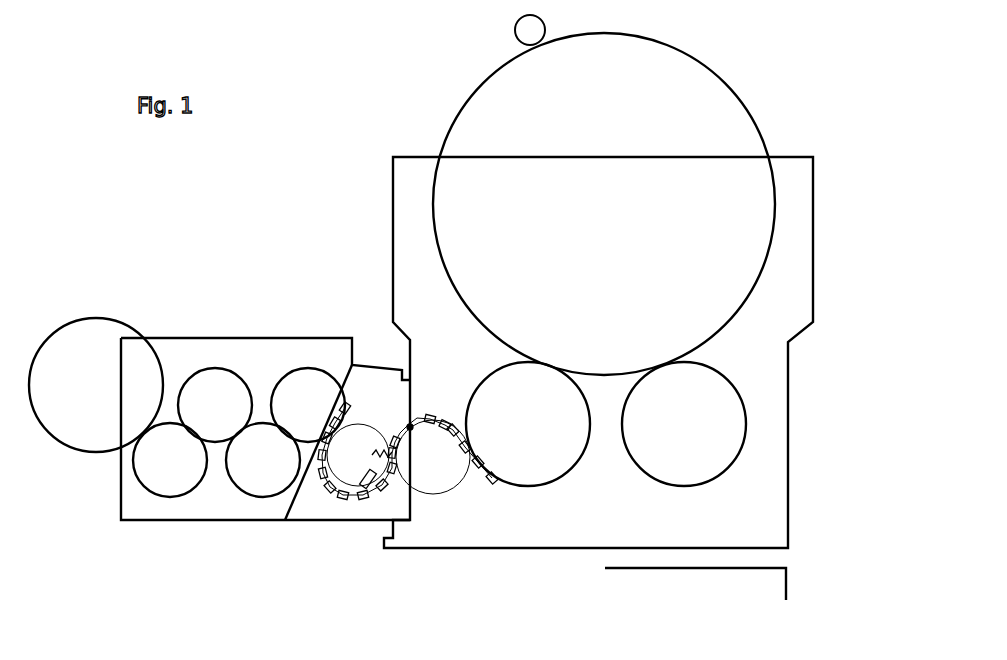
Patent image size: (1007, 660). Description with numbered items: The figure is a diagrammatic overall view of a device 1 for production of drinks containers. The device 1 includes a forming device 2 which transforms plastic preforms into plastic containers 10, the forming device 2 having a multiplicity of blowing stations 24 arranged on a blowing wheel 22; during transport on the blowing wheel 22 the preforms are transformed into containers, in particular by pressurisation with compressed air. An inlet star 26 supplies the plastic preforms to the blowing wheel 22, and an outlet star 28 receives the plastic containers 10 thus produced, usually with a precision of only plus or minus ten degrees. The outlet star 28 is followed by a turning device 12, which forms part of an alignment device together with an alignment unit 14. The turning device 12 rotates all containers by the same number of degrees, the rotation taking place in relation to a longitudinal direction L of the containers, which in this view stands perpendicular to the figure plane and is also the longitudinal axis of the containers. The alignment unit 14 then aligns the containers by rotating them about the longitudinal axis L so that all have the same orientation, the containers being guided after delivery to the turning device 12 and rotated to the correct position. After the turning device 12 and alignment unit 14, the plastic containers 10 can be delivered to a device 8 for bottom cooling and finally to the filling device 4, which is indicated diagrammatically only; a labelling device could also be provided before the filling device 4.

The device for production of drinks containers 1 is at (302, 182).
The forming device 2 is at (380, 220).
The filling device 4 is at (162, 315).
The device for bottom cooling 8 is at (290, 383).
The plastic containers 10 is at (492, 478).
The turning device 12 is at (440, 470).
The alignment unit 14 is at (392, 494).
The blowing wheel 22 is at (498, 118).
The blowing stations 24 is at (528, 28).
The inlet star 26 is at (735, 430).
The outlet star 28 is at (538, 448).
The longitudinal direction L is at (410, 427).